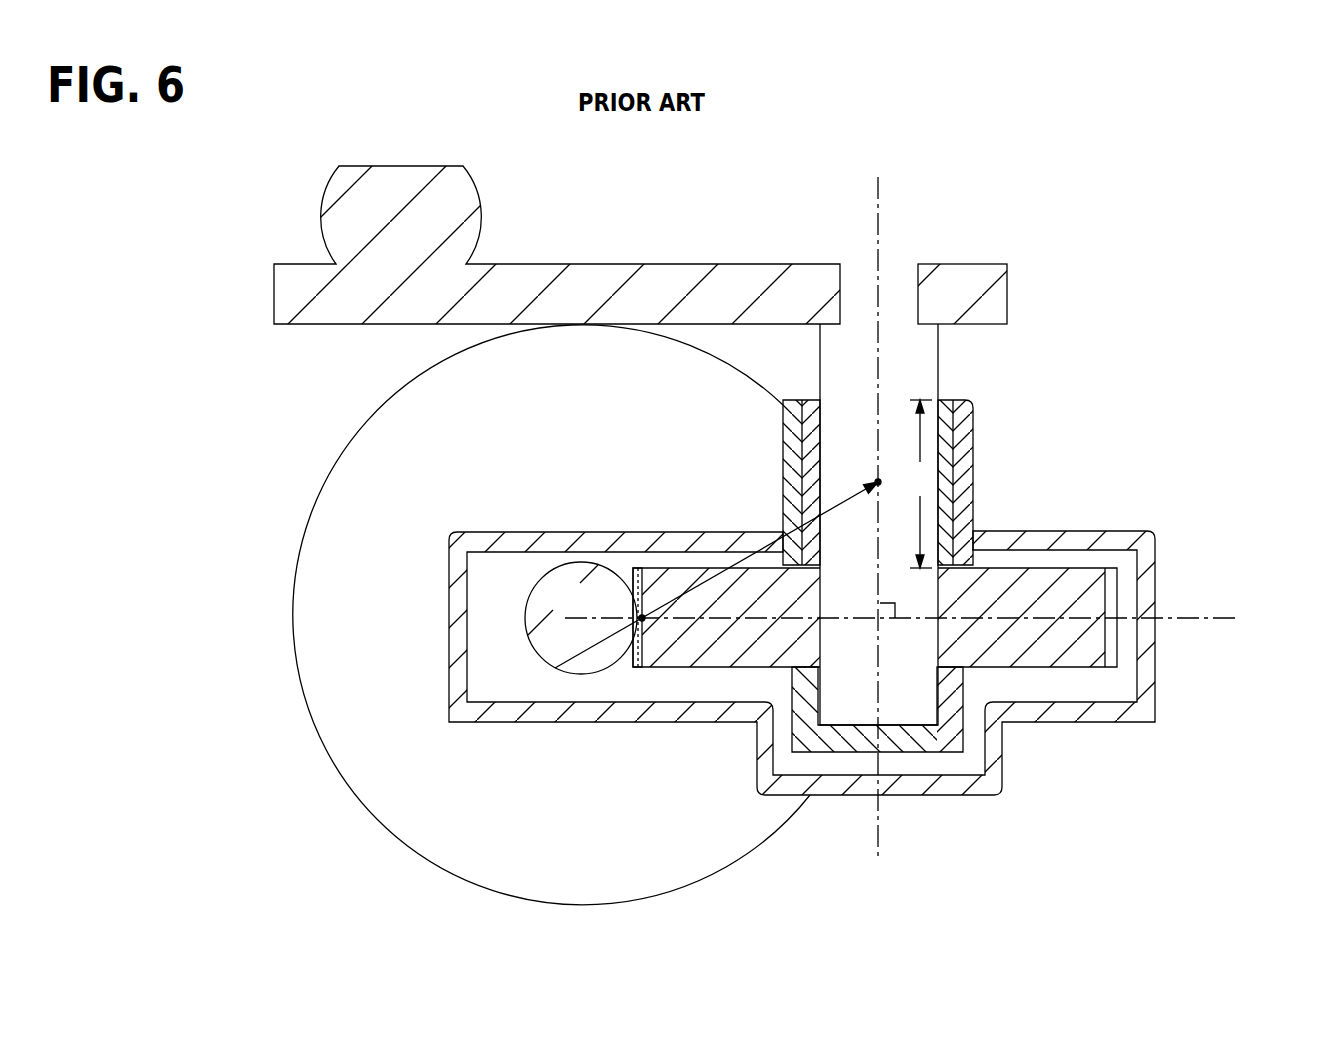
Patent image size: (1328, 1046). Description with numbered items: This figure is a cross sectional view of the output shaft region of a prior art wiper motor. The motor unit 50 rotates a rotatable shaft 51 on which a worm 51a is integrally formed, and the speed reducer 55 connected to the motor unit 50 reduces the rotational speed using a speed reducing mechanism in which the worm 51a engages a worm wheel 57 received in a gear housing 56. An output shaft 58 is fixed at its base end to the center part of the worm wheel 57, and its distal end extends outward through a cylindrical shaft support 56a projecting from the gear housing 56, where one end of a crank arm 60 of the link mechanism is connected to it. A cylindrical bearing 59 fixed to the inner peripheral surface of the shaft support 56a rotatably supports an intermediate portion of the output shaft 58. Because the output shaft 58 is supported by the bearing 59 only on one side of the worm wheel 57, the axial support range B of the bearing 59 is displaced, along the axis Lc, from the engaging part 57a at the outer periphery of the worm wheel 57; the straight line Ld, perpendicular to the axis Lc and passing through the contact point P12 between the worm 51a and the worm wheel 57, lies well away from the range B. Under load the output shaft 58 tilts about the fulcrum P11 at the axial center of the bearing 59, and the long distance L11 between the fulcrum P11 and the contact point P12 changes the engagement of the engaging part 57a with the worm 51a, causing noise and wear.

The motor unit 50 is at (372, 425).
The rotatable shaft 51 is at (664, 663).
The worm 51a is at (548, 562).
The speed reducer 55 is at (821, 635).
The gear housing 56 is at (1108, 531).
The cylindrical shaft support 56a is at (971, 450).
The worm wheel 57 is at (1046, 572).
The engaging part 57a is at (640, 568).
The output shaft 58 is at (902, 270).
The cylindrical bearing 59 is at (946, 402).
The crank arm 60 is at (595, 275).
The axis of the output shaft Lc is at (880, 202).
The straight line Ld is at (1225, 618).
The distance L11 is at (750, 552).
The fulcrum P11 is at (874, 480).
The contact point P12 is at (634, 613).
The axial support range B is at (921, 484).